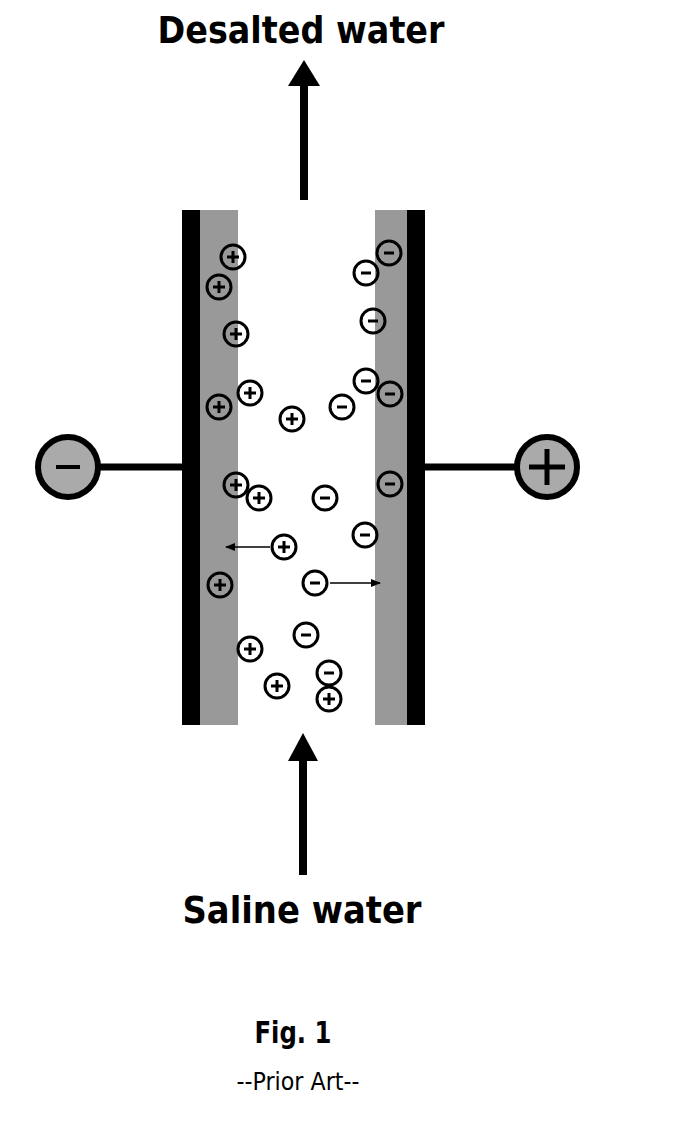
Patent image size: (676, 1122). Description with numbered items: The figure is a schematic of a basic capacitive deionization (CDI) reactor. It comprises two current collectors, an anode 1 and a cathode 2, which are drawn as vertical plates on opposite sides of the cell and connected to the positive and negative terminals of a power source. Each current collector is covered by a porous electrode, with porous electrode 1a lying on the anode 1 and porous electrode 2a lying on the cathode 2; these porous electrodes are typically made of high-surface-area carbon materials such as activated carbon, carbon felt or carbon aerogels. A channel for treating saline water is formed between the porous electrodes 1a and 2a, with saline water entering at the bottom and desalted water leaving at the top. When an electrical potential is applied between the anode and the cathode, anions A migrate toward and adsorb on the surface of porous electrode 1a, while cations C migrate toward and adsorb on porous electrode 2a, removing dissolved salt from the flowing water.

The anode 1 is at (415, 205).
The porous electrode 1a is at (390, 205).
The cathode 2 is at (188, 206).
The porous electrode 2a is at (222, 205).
The anions A is at (362, 256).
The cations C is at (266, 386).